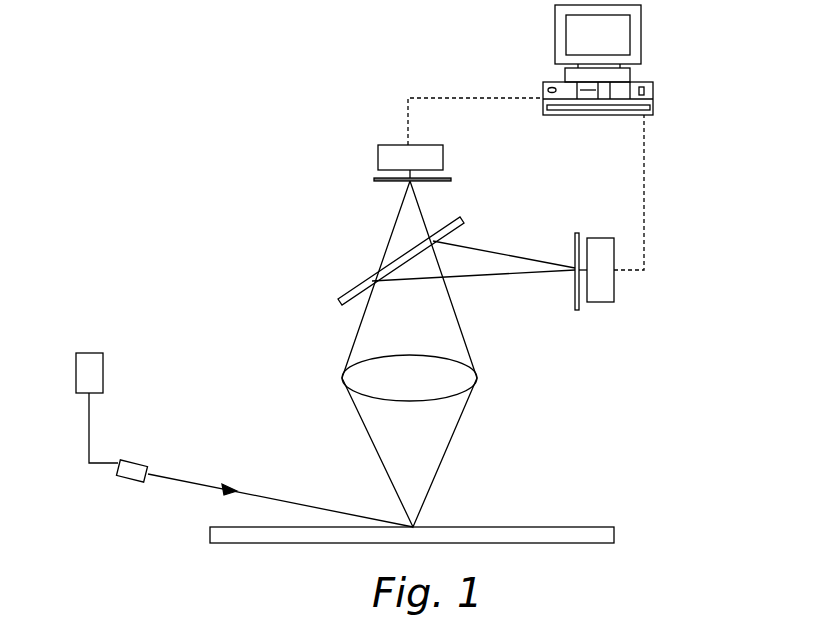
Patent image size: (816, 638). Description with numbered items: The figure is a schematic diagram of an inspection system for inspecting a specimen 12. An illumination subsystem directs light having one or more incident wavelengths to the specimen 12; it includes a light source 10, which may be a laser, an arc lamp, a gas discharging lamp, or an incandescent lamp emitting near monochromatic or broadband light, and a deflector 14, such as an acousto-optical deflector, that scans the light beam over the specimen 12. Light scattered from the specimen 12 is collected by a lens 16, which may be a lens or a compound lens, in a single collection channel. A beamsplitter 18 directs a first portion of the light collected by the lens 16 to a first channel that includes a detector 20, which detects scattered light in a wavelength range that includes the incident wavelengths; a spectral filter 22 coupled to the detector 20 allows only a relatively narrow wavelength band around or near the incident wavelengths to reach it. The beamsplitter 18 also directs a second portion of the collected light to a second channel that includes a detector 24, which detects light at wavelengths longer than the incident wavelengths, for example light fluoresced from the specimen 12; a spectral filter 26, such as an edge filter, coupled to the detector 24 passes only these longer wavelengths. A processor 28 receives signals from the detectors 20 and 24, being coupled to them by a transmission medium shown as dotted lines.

The light source 10 is at (83, 353).
The specimen 12 is at (602, 527).
The deflector 14 is at (133, 461).
The lens 16 is at (477, 378).
The beamsplitter 18 is at (352, 288).
The detector 20 is at (615, 300).
The spectral filter 22 is at (575, 290).
The detector 24 is at (380, 145).
The spectral filter 26 is at (450, 178).
The processor 28 is at (642, 33).